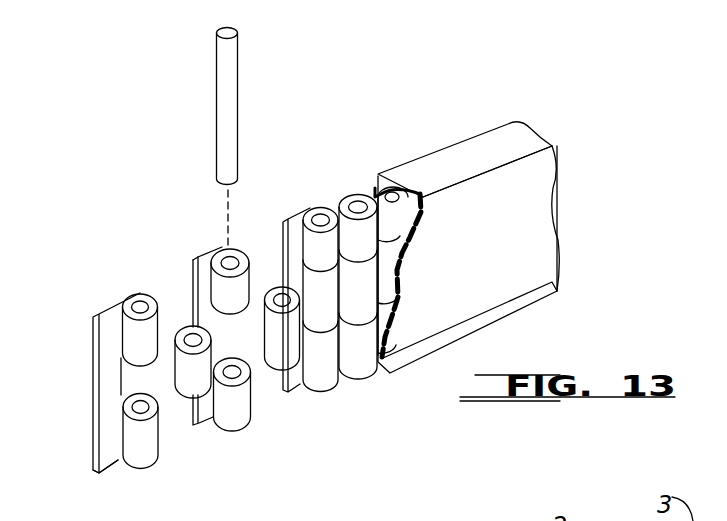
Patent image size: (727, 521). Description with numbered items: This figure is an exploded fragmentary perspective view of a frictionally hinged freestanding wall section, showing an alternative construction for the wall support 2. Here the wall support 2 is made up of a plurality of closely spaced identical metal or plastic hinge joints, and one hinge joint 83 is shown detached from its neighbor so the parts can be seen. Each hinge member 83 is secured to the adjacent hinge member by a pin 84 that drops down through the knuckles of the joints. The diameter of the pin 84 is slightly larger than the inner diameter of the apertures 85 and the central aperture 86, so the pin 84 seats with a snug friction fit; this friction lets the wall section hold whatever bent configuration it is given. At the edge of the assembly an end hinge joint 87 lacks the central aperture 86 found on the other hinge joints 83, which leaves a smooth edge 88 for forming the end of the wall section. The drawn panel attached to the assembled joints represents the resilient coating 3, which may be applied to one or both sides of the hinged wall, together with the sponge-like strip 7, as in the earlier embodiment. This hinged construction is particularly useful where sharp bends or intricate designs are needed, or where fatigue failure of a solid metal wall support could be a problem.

The wall support 2 is at (441, 147).
The resilient coating 3 is at (505, 186).
The sponge-like strip 7 is at (430, 348).
The hinge joint 83 is at (196, 260).
The pin 84 is at (228, 44).
The aperture 85 is at (244, 246).
The central aperture 86 is at (188, 385).
The end hinge joint 87 is at (113, 466).
The smooth edge 88 is at (98, 402).